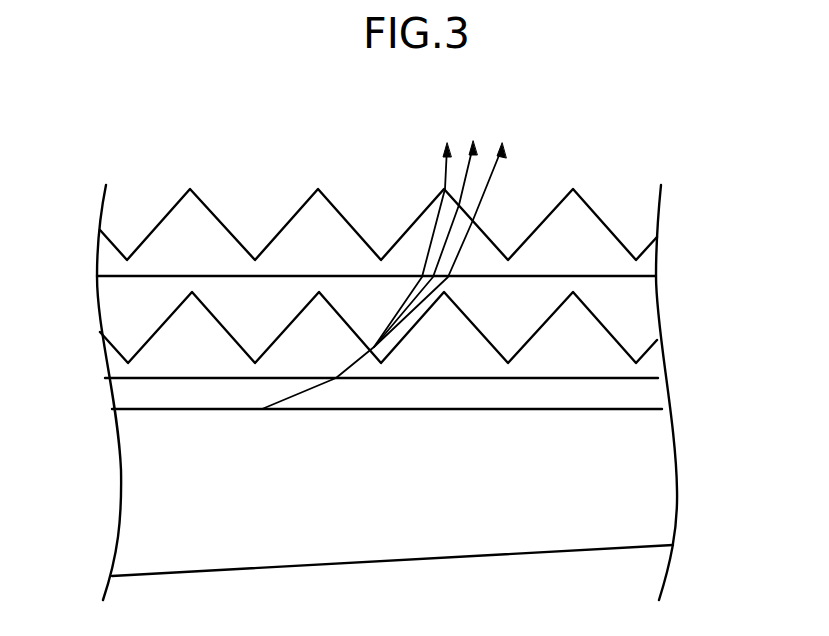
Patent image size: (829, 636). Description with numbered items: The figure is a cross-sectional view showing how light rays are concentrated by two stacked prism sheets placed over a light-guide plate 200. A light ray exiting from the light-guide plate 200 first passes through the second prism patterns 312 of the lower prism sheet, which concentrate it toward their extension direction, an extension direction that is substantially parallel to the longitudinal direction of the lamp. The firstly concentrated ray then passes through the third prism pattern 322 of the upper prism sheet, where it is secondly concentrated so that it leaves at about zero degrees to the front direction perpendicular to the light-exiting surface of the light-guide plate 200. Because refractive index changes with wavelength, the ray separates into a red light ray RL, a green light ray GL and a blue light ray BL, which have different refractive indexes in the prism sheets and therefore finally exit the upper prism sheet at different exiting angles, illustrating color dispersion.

The light-guide plate 200 is at (647, 482).
The second prism patterns 312 is at (595, 330).
The third prism pattern 322 is at (593, 229).
The blue light ray BL is at (445, 166).
The green light ray GL is at (466, 186).
The red light ray RL is at (482, 209).